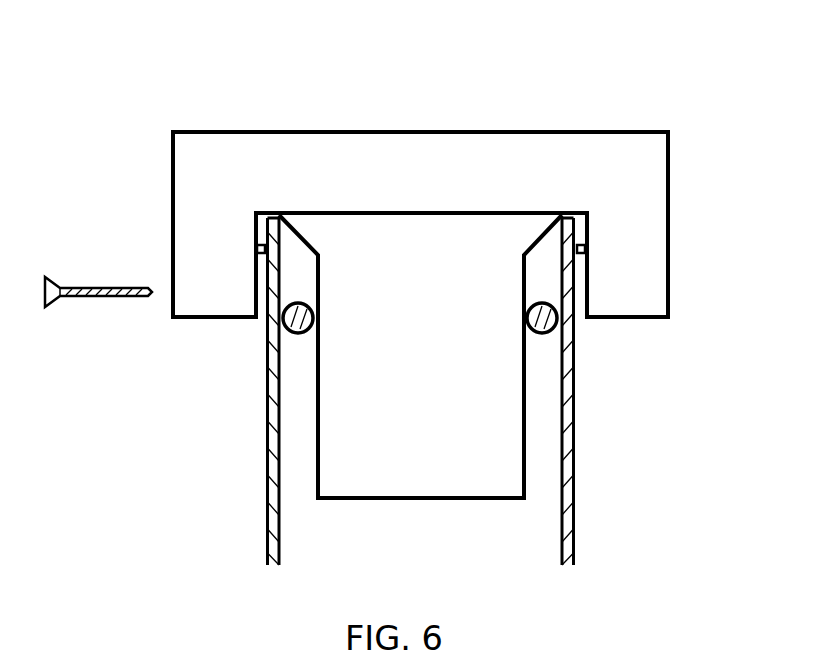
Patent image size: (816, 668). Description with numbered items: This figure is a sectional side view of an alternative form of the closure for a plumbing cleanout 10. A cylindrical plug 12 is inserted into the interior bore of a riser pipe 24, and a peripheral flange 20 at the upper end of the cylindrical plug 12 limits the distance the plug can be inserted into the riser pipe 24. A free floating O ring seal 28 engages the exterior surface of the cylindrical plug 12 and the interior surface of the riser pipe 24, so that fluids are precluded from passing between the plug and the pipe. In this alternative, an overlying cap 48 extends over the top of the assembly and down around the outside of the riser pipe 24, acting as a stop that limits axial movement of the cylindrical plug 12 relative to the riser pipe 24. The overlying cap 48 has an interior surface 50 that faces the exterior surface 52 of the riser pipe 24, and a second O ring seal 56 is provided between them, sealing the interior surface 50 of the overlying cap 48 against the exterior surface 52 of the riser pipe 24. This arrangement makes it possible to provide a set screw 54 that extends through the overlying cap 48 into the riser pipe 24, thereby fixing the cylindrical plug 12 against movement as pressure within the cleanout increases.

The closure for a plumbing cleanout 10 is at (245, 80).
The cylindrical plug 12 is at (380, 385).
The peripheral flange 20 is at (528, 227).
The riser pipe 24 is at (270, 478).
The O ring seal 28 is at (285, 334).
The overlying cap 48 is at (643, 189).
The interior surface 50 is at (586, 298).
The exterior surface 52 is at (577, 423).
The set screw 54 is at (92, 273).
The O ring seal 56 is at (585, 248).